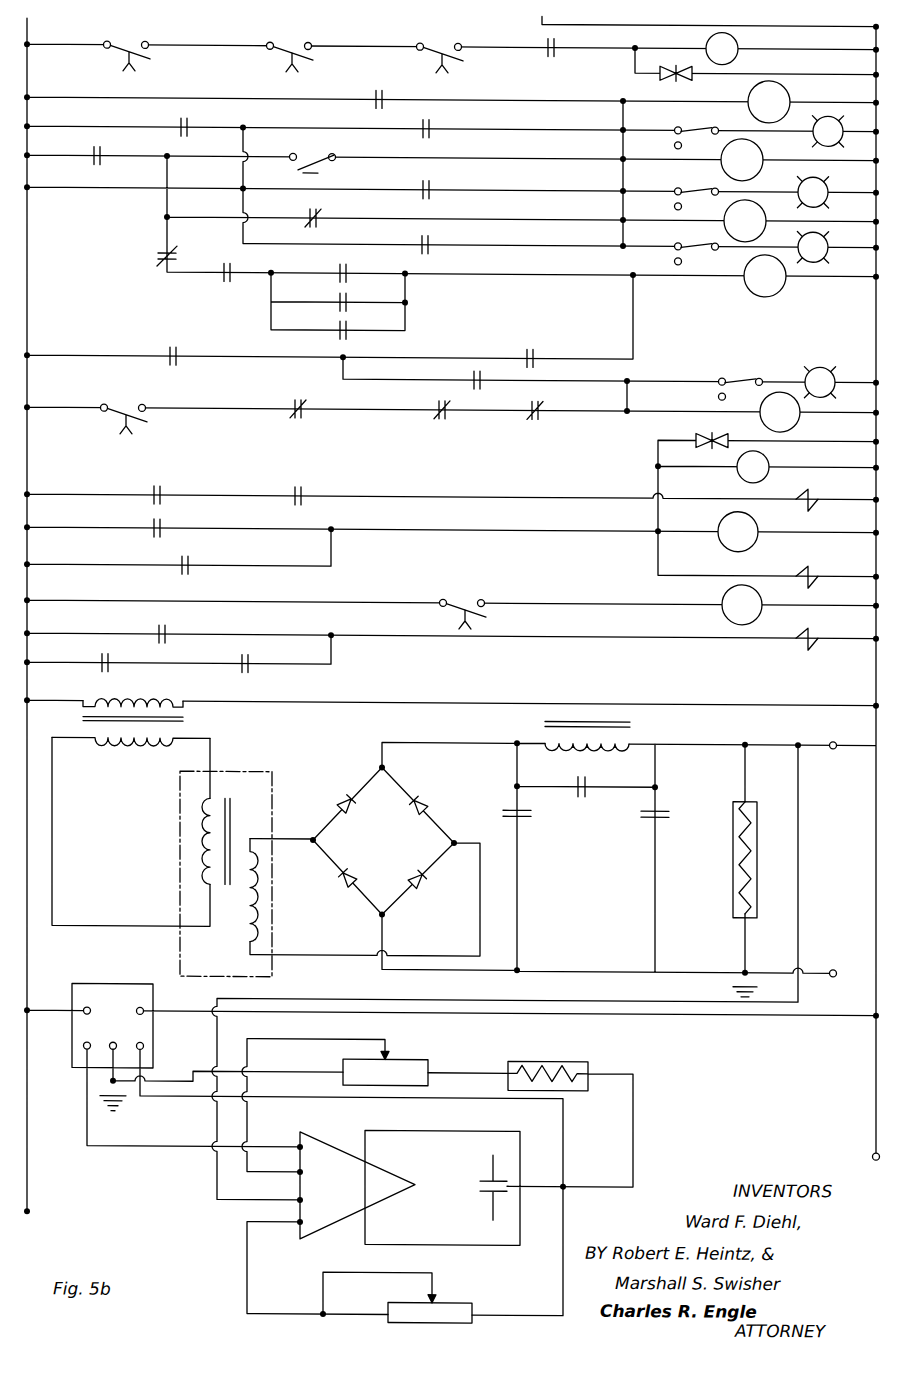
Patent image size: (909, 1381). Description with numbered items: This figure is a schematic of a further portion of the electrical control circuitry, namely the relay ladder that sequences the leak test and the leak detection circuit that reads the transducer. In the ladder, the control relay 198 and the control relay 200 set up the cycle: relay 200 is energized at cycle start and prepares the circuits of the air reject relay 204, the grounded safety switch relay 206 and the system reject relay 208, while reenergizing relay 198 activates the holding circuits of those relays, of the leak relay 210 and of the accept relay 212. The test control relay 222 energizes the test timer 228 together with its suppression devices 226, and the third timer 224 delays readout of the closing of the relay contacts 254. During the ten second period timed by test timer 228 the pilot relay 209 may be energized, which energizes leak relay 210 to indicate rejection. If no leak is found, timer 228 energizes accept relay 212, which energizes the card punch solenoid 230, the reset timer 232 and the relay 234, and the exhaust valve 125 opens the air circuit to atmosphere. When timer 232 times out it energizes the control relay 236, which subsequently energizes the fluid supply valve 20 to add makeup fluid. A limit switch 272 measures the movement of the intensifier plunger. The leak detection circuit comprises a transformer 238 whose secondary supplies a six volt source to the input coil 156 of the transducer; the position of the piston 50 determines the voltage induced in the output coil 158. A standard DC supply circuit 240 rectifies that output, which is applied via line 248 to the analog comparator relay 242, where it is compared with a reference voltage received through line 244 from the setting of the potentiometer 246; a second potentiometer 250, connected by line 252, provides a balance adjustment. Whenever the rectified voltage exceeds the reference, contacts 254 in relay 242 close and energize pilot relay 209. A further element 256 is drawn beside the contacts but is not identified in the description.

The fluid supply valve 20 is at (797, 644).
The piston 50 is at (233, 813).
The exhaust valve 125 is at (818, 562).
The input coil 156 is at (203, 853).
The output coil 158 is at (257, 905).
The control relay 198 is at (190, 124).
The control relay 200 is at (93, 165).
The air reject relay 204 is at (432, 187).
The grounded safety switch relay 206 is at (728, 226).
The system reject relay 208 is at (763, 283).
The pilot relay 209 is at (378, 88).
The leak relay 210 is at (432, 127).
The accept relay 212 is at (467, 382).
The test control relay 222 is at (165, 492).
The third timer 224 is at (440, 46).
The suppression devices 226 is at (660, 71).
The test timer 228 is at (135, 42).
The card punch solenoid 230 is at (820, 487).
The reset timer 232 is at (767, 454).
The relay 234 is at (157, 258).
The control relay 236 is at (720, 606).
The transformer 238 is at (115, 748).
The DC supply circuit 240 is at (630, 894).
The analog comparator relay 242 is at (332, 1197).
The line 244 is at (247, 1122).
The potentiometer 246 is at (410, 1065).
The line 248 is at (555, 996).
The second potentiometer 250 is at (452, 1308).
The line 252 is at (267, 1310).
The relay contacts 254 is at (548, 55).
The capacitor 256 is at (556, 55).
The limit switch 272 is at (333, 155).